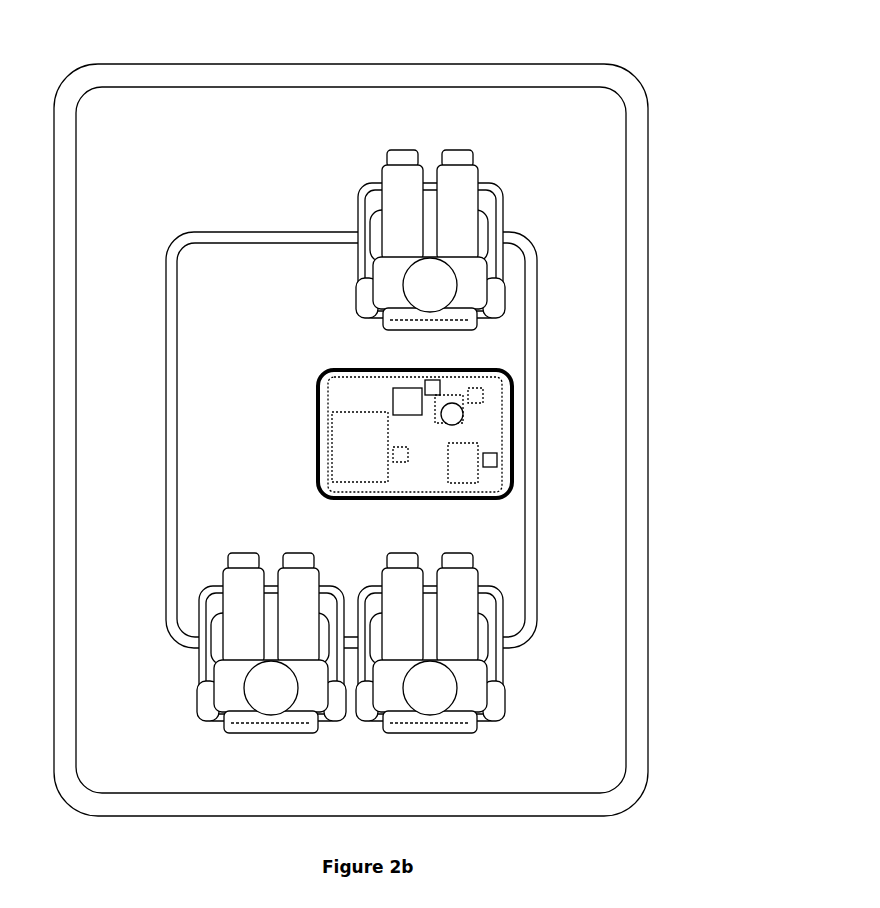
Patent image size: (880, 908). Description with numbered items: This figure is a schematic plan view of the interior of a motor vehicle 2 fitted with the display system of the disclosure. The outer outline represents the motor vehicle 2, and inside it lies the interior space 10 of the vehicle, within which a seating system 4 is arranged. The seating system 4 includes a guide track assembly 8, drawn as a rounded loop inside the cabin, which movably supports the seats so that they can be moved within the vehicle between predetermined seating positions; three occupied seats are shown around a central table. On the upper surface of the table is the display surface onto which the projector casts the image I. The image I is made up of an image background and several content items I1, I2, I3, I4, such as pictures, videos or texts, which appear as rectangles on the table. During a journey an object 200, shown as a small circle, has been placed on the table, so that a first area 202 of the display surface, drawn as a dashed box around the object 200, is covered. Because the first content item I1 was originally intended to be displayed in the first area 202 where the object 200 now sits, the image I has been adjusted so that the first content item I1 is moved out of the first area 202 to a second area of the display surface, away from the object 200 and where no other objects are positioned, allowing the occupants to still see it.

The motor vehicle 2 is at (698, 113).
The seating system 4 is at (586, 281).
The guide track assembly 8 is at (543, 505).
The interior space 10 is at (270, 445).
The object 200 is at (463, 413).
The first area 202 is at (460, 423).
The first content item I1 is at (403, 387).
The content item I2 is at (431, 386).
The content item I3 is at (360, 447).
The content item I4 is at (398, 463).
The image I is at (414, 440).